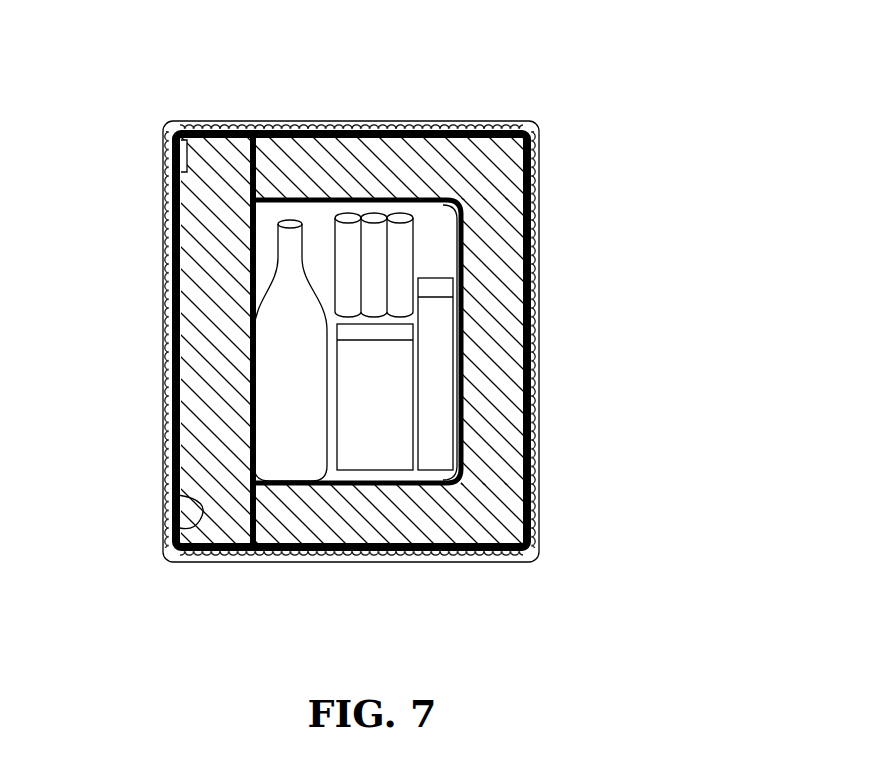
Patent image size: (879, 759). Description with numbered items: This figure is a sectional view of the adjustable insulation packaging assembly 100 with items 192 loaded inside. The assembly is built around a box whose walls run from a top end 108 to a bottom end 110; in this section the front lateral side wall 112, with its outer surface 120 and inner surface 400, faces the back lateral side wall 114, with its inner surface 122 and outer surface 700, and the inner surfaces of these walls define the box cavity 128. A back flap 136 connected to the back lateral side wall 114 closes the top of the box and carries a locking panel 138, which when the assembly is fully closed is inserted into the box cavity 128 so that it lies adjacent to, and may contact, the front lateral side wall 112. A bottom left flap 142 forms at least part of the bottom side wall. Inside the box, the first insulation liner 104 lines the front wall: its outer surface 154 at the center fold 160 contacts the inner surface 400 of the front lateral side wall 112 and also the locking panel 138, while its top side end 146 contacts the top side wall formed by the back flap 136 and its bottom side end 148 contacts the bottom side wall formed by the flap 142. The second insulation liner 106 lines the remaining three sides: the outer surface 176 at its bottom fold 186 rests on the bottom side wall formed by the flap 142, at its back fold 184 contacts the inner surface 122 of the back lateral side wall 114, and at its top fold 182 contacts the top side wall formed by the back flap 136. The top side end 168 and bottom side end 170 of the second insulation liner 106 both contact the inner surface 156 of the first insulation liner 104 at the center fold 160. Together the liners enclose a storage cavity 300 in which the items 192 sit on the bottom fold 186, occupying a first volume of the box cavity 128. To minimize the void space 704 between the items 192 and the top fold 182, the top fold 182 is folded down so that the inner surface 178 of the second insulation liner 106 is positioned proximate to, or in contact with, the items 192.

The adjustable insulation packaging assembly 100 is at (651, 113).
The first insulation liner 104 is at (165, 178).
The second insulation liner 106 is at (500, 512).
The top end 108 is at (540, 125).
The bottom end 110 is at (537, 560).
The front lateral side wall 112 is at (165, 210).
The back lateral side wall 114 is at (540, 228).
The outer surface 120 is at (164, 427).
The inner surface 122 is at (495, 207).
The box cavity 128 is at (197, 125).
The back flap 136 is at (327, 124).
The locking panel 138 is at (157, 128).
The bottom left flap 142 is at (500, 560).
The top side end 146 is at (220, 125).
The bottom side end 148 is at (208, 563).
The outer surface 154 is at (165, 322).
The inner surface 156 is at (260, 230).
The center fold 160 is at (205, 393).
The top side end 168 is at (250, 125).
The bottom side end 170 is at (250, 525).
The outer surface 176 is at (380, 555).
The inner surface 178 is at (420, 438).
The top fold 182 is at (525, 128).
The back fold 184 is at (493, 282).
The bottom fold 186 is at (345, 510).
The items 192 is at (463, 345).
The storage cavity 300 is at (278, 215).
The inner surface 400 is at (165, 530).
The outer surface 700 is at (541, 350).
The void space 704 is at (345, 196).